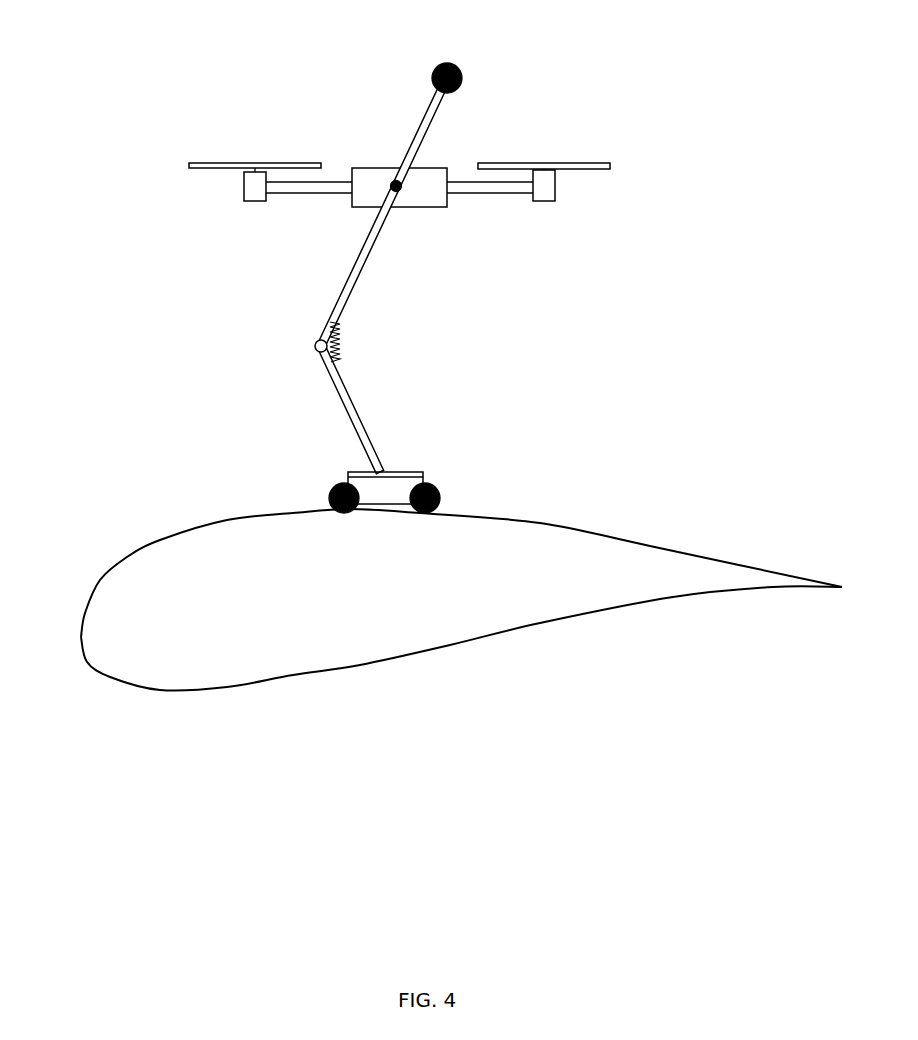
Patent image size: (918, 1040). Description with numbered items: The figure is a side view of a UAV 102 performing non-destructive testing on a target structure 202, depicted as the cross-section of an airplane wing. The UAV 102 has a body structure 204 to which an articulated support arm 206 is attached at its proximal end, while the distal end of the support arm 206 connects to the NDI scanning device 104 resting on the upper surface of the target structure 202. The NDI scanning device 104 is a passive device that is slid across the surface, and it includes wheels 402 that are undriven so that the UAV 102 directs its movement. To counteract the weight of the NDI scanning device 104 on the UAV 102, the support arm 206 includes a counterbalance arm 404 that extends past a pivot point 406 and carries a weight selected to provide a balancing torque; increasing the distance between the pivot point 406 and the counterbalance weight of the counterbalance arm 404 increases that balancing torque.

The UAV 102 is at (686, 112).
The NDI scanning device 104 is at (423, 477).
The target structure 202 is at (461, 600).
The body structure 204 is at (382, 168).
The articulated support arm 206 is at (338, 298).
The wheels 402 is at (442, 502).
The counterbalance arm 404 is at (461, 74).
The pivot point 406 is at (399, 189).